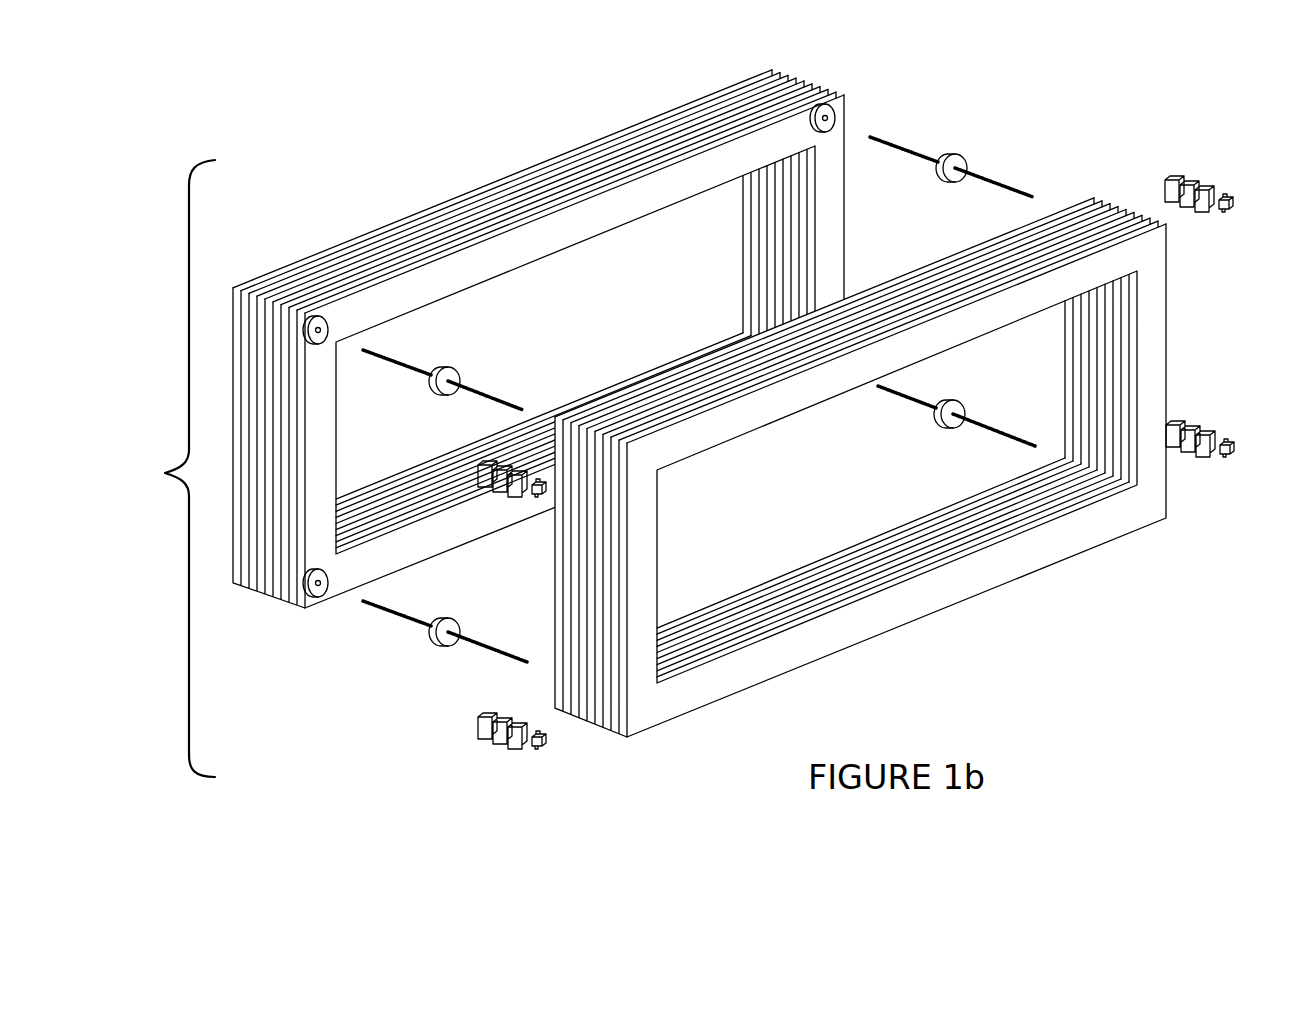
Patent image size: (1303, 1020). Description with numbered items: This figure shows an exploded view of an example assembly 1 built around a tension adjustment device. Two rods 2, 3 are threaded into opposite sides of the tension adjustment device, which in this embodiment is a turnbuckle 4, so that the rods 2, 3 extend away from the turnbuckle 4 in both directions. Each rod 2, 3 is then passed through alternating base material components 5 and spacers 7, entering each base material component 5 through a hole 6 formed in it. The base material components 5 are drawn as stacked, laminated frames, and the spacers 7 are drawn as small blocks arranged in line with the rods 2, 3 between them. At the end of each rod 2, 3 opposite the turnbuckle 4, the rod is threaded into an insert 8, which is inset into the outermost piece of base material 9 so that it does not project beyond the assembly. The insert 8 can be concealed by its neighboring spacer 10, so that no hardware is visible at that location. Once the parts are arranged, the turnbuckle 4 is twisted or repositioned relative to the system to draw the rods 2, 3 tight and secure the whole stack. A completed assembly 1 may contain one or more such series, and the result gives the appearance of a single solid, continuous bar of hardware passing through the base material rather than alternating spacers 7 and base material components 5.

The assembly 1 is at (851, 23).
The rod 2 is at (908, 150).
The rod 3 is at (993, 183).
The turnbuckle 4 is at (945, 183).
The base material components 5 is at (798, 57).
The hole 6 is at (836, 113).
The spacers 7 is at (1195, 158).
The insert 8 is at (1258, 242).
The outermost piece of base material 9 is at (1155, 386).
The neighboring spacer 10 is at (1216, 249).